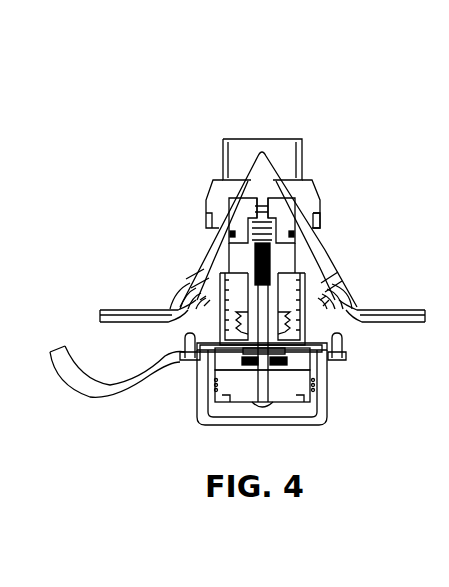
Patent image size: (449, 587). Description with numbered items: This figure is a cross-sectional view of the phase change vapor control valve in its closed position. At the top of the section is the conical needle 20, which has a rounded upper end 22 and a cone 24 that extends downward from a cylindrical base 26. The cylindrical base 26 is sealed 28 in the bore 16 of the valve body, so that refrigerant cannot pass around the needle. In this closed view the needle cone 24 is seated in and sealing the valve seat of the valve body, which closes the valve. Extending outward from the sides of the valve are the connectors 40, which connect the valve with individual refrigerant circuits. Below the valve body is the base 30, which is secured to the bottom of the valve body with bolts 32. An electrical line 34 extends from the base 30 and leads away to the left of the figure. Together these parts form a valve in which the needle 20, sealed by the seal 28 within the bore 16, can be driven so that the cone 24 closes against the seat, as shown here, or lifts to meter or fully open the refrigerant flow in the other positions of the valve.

The bore 16 is at (234, 262).
The conical needle 20 is at (277, 165).
The rounded upper end 22 is at (263, 143).
The cone 24 is at (285, 160).
The cylindrical base 26 is at (296, 222).
The seal 28 is at (295, 235).
The base 30 is at (323, 420).
The bolts 32 is at (335, 357).
The electrical line 34 is at (128, 377).
The connectors 40 is at (394, 307).